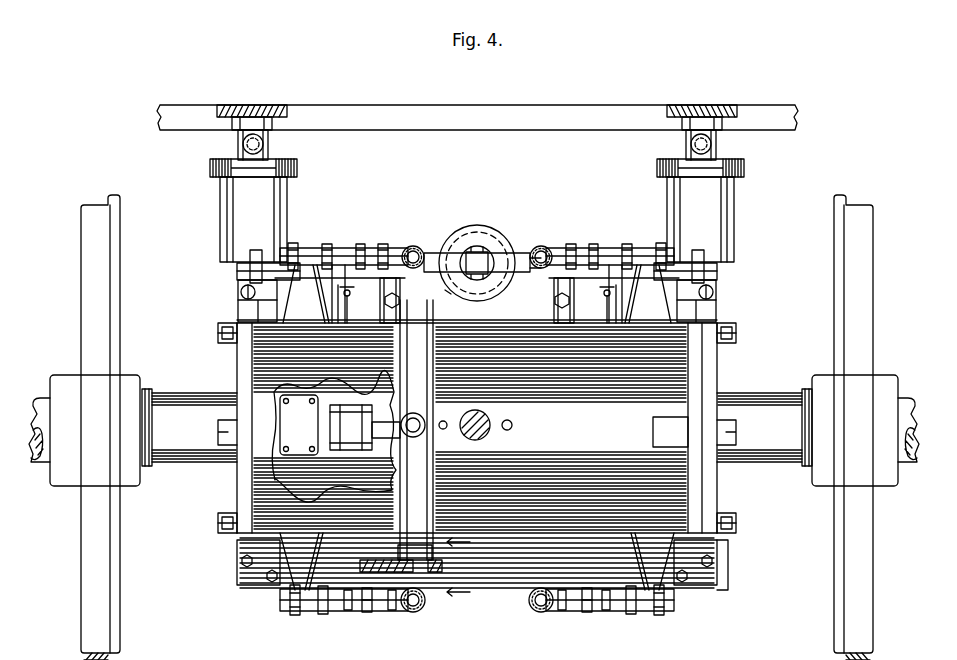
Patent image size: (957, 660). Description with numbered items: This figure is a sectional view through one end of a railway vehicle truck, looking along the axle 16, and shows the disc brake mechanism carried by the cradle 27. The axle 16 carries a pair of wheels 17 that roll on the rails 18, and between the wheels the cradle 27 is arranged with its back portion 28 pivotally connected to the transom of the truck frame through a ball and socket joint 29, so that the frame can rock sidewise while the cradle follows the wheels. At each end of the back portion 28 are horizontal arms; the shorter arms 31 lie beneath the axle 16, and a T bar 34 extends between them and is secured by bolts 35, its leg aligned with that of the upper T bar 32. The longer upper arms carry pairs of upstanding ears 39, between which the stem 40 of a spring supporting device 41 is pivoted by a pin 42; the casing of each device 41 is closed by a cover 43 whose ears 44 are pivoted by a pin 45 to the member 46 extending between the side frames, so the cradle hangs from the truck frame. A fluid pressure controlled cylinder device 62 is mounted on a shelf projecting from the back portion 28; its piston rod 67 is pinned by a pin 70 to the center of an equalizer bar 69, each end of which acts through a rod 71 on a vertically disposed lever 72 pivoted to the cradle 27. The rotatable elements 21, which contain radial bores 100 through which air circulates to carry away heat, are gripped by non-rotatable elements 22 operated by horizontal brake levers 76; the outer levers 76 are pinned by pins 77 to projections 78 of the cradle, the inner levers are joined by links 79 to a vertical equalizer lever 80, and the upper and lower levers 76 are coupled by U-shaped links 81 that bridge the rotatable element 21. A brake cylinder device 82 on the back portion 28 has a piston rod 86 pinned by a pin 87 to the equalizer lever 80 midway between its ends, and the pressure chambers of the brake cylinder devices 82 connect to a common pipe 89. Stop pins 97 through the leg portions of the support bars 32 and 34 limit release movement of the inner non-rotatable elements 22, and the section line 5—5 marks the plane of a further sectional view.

The section line 5— 5 is at (460, 568).
The axle 16 is at (215, 452).
The wheels 17 is at (111, 633).
The rails 18 is at (128, 657).
The rotatable elements 21 is at (368, 614).
The non-rotatable elements 22 is at (348, 612).
The cradle 27 is at (718, 360).
The back portion 28 is at (692, 387).
The ball and socket joint 29 is at (492, 422).
The arms 31 is at (710, 548).
The T bar 32 is at (451, 299).
The T bar 34 is at (432, 558).
The bolts 35 is at (268, 582).
The ears 39 is at (245, 310).
The stem 40 is at (240, 276).
The spring supporting device 41 is at (283, 197).
The pin 42 is at (242, 298).
The cover 43 is at (297, 167).
The ears 44 is at (240, 152).
The pin 45 is at (264, 144).
The member 46 is at (368, 116).
The fluid pressure controlled cylinder device 62 is at (469, 232).
The piston rod 67 is at (497, 266).
The equalizer bar 69 is at (529, 270).
The pin 70 is at (483, 256).
The rod 71 is at (256, 268).
The lever 72 is at (226, 336).
The brake levers 76 is at (326, 247).
The pins 77 is at (296, 247).
The projections 78 is at (298, 325).
The links 79 is at (418, 249).
The equalizer lever 80 is at (430, 352).
The links 81 is at (358, 253).
The brake cylinder devices 82 is at (300, 394).
The piston rod 86 is at (380, 410).
The pin 87 is at (388, 428).
The common pipe 89 is at (217, 432).
The stop pins 97 is at (396, 542).
The radial bores 100 is at (345, 300).